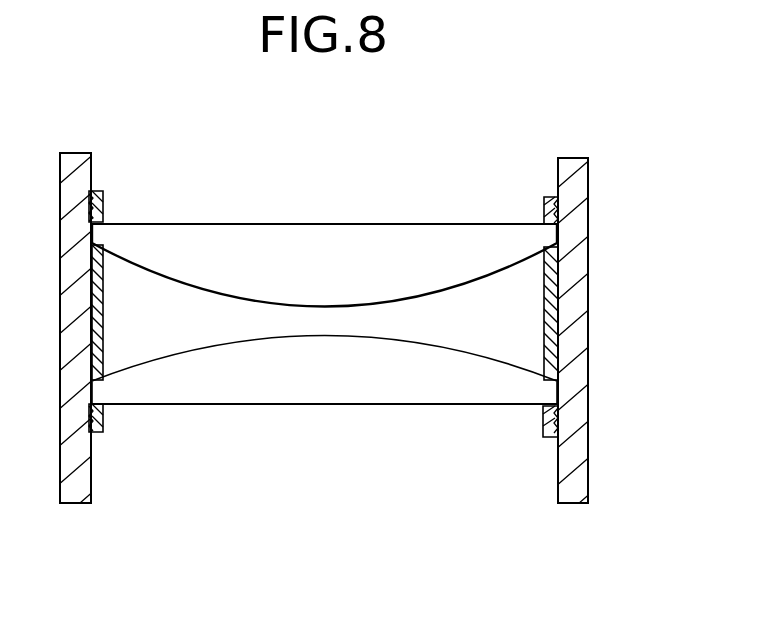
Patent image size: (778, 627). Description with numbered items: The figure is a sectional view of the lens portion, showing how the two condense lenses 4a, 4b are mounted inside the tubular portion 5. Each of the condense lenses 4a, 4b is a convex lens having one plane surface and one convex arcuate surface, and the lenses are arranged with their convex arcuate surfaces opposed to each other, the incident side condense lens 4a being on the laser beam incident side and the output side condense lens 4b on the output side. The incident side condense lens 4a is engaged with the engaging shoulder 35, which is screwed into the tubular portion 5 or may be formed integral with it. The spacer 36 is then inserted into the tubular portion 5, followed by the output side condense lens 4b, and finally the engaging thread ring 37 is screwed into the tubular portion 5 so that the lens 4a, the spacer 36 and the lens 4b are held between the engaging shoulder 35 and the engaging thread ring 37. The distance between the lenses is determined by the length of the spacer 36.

The incident side condense lens 4a is at (441, 228).
The output side condense lens 4b is at (445, 383).
The tubular portion 5 is at (578, 259).
The engaging shoulder 35 is at (545, 197).
The spacer 36 is at (553, 318).
The engaging thread ring 37 is at (543, 420).